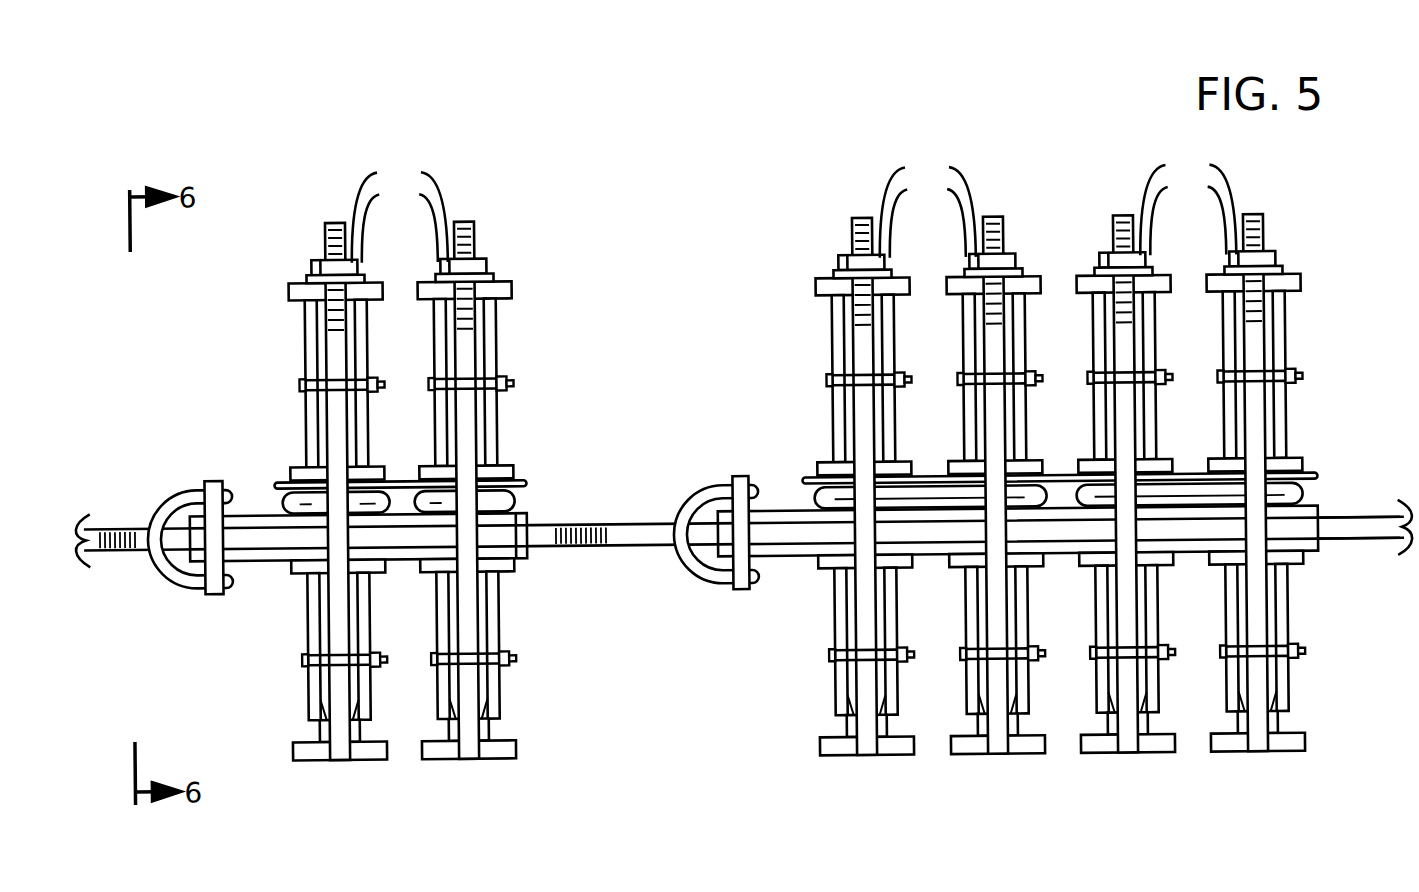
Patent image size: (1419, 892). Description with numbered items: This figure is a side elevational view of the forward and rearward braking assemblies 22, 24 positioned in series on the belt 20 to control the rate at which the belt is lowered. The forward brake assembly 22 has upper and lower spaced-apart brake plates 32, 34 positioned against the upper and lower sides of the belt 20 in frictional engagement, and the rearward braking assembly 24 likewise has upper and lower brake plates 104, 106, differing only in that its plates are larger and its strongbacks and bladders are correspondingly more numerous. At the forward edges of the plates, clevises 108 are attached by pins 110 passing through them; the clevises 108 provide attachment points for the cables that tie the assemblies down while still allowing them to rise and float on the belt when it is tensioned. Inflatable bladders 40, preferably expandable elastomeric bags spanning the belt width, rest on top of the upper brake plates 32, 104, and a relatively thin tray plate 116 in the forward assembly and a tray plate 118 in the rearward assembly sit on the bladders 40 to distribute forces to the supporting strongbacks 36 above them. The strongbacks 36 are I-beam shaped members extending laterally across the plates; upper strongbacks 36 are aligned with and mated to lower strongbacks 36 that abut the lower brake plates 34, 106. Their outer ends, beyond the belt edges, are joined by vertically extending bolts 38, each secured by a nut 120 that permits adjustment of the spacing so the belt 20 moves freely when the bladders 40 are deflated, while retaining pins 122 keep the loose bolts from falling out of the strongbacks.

The belt 20 is at (620, 549).
The forward brake assembly 22 is at (336, 180).
The rearward braking assembly 24 is at (850, 182).
The upper brake plate 32 is at (528, 518).
The lower brake plate 34 is at (527, 562).
The strongback 36 is at (307, 332).
The bolt 38 is at (793, 205).
The inflatable bladder 40 is at (280, 497).
The upper brake plate 104 is at (1318, 518).
The lower brake plate 106 is at (1318, 562).
The clevis 108 is at (156, 505).
The pin 110 is at (210, 480).
The tray plate 116 is at (528, 484).
The tray plate 118 is at (1318, 485).
The nut 120 is at (793, 217).
The retaining pin 122 is at (305, 383).